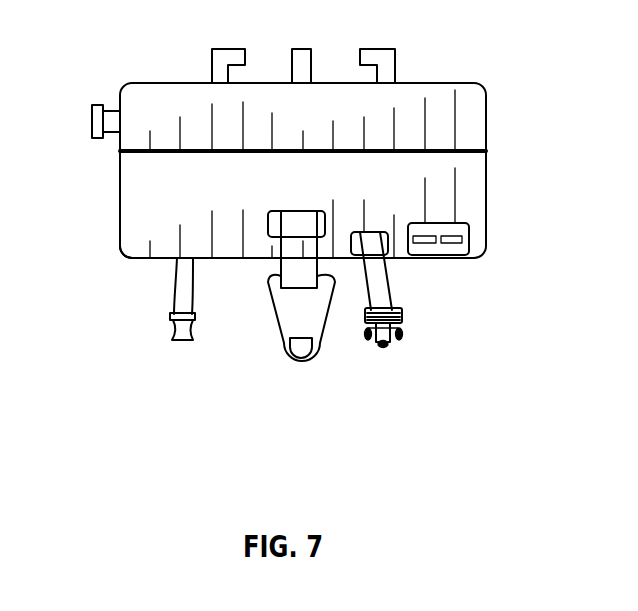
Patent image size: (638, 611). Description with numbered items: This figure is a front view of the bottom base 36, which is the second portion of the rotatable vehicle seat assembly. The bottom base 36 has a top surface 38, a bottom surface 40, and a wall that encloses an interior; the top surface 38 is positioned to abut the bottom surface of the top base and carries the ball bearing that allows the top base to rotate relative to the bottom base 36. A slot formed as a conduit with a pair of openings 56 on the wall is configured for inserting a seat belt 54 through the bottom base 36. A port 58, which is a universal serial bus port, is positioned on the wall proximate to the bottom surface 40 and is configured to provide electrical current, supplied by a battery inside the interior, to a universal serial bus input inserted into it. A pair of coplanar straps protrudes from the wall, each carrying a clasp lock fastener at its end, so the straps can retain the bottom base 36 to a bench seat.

The bottom base 36 is at (462, 168).
The top surface 38 is at (138, 153).
The bottom surface 40 is at (138, 258).
The seat belt 54 is at (285, 303).
The pair of openings 56 is at (325, 221).
The port 58 is at (466, 238).